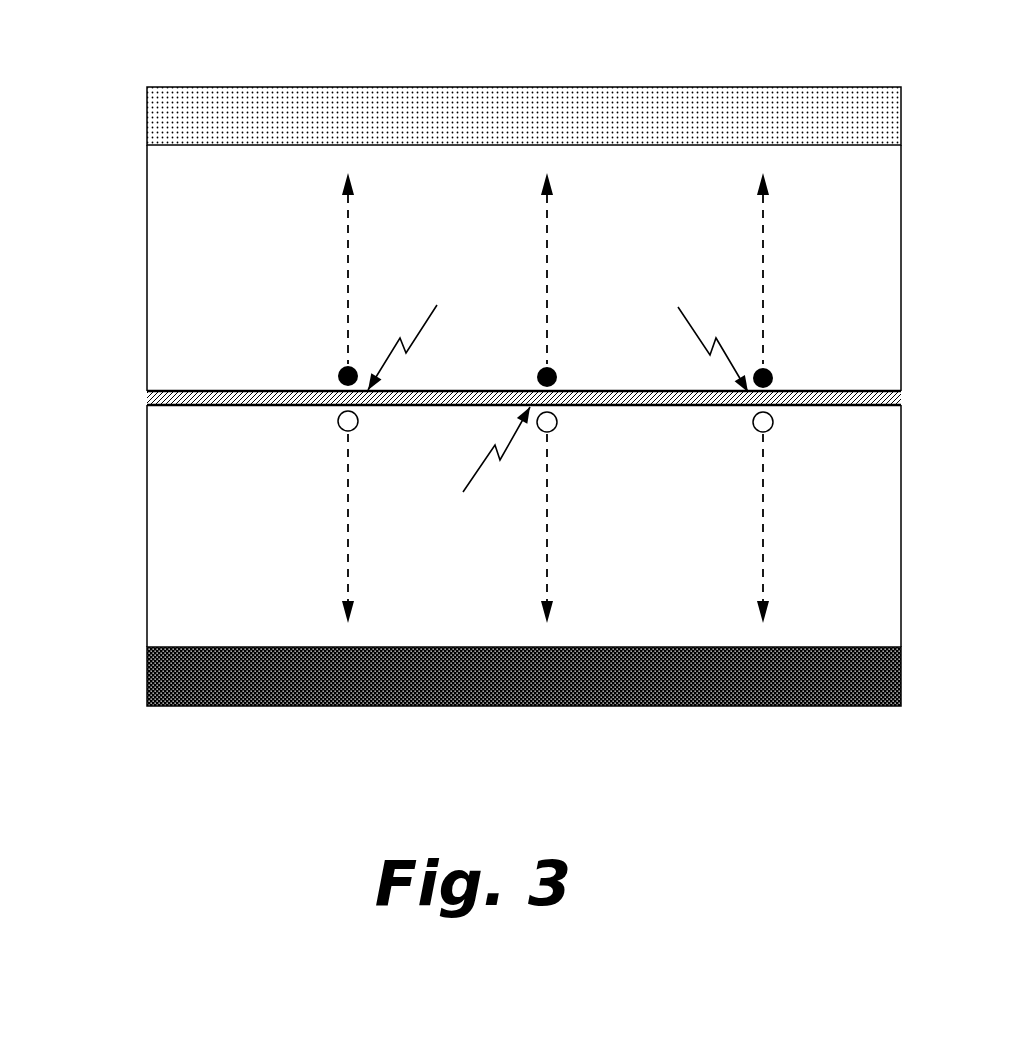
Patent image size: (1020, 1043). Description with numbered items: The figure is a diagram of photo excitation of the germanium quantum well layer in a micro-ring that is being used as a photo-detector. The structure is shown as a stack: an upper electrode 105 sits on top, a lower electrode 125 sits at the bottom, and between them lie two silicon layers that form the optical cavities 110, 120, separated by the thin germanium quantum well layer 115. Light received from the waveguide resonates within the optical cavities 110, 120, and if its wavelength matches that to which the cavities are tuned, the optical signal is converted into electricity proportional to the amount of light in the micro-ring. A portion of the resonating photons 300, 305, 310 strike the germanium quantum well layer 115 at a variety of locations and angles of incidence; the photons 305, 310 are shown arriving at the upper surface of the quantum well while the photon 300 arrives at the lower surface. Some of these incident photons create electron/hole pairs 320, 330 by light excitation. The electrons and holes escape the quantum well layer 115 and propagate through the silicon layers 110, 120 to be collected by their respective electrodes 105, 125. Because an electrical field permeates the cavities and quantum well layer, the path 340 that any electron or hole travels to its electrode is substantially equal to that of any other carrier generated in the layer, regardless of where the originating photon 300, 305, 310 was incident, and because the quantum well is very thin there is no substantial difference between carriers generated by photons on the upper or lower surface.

The electrode 105 is at (558, 127).
The optical cavity 110 is at (183, 248).
The germanium quantum well layer 115 is at (147, 393).
The optical cavity 120 is at (170, 570).
The electrode 125 is at (695, 708).
The photon 300 is at (475, 473).
The photon 305 is at (425, 330).
The photon 310 is at (690, 337).
The electron/hole pair (electron) 320 is at (775, 375).
The electron/hole pair (hole) 330 is at (770, 425).
The path 340 is at (763, 242).